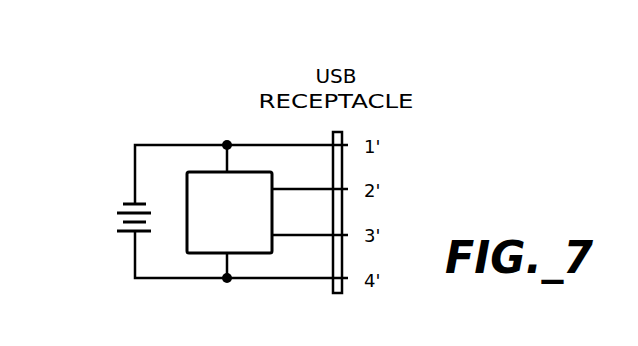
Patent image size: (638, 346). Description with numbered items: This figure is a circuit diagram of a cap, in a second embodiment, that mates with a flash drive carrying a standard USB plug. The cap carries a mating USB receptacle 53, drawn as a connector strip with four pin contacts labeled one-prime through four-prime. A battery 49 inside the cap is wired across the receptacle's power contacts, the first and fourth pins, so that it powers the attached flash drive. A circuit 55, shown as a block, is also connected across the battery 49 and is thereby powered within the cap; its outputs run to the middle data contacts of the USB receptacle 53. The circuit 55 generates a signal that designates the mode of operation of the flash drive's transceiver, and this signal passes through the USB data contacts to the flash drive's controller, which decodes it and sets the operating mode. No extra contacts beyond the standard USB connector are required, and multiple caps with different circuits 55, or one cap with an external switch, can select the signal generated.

The battery 49 is at (118, 206).
The circuit 55 is at (207, 245).
The USB receptacle 53 is at (337, 293).